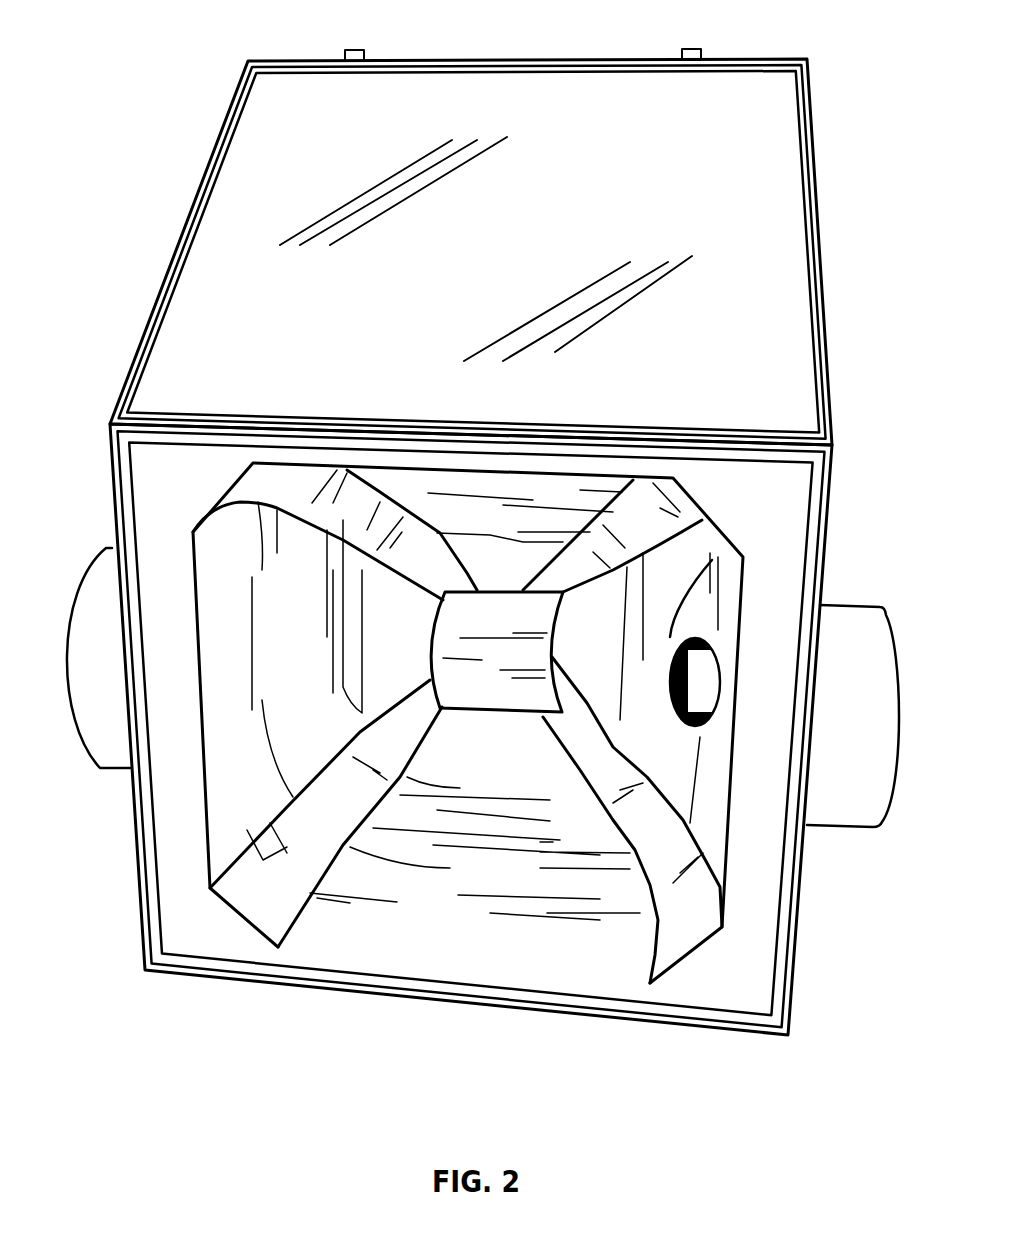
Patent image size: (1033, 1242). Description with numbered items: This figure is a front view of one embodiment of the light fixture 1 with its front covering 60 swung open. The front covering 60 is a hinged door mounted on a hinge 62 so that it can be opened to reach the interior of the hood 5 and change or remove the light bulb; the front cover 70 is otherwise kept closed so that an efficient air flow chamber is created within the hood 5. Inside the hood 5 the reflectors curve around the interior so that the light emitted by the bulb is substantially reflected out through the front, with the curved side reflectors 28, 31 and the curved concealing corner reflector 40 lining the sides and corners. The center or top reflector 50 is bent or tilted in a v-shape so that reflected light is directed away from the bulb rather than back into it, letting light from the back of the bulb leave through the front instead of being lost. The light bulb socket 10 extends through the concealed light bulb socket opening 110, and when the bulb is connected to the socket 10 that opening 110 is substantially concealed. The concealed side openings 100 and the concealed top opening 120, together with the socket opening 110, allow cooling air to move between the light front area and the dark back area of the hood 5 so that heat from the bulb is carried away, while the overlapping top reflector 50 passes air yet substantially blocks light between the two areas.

The light fixture 1 is at (93, 386).
The hood 5 is at (770, 1037).
The light bulb socket 10 is at (707, 668).
The curved side reflector 28 is at (458, 922).
The curved side reflector 31 is at (687, 762).
The curved concealing corner reflector 40 is at (660, 860).
The top reflector 50 is at (460, 672).
The front covering 60 is at (798, 73).
The hinge 62 is at (645, 460).
The front cover 70 is at (661, 197).
The concealed side opening 100 is at (737, 848).
The concealed light bulb socket opening 110 is at (712, 560).
The concealed top opening 120 is at (552, 645).